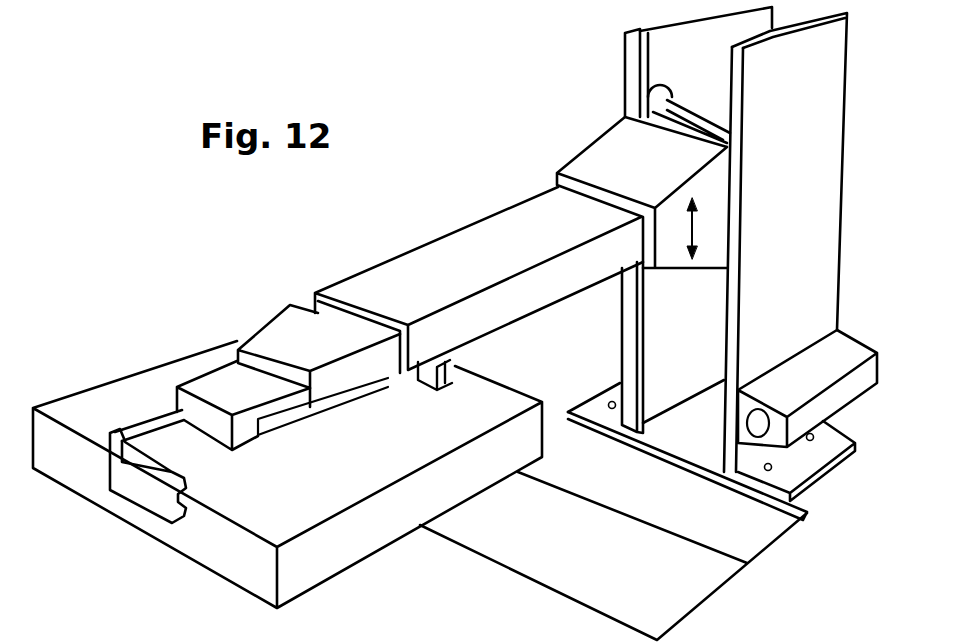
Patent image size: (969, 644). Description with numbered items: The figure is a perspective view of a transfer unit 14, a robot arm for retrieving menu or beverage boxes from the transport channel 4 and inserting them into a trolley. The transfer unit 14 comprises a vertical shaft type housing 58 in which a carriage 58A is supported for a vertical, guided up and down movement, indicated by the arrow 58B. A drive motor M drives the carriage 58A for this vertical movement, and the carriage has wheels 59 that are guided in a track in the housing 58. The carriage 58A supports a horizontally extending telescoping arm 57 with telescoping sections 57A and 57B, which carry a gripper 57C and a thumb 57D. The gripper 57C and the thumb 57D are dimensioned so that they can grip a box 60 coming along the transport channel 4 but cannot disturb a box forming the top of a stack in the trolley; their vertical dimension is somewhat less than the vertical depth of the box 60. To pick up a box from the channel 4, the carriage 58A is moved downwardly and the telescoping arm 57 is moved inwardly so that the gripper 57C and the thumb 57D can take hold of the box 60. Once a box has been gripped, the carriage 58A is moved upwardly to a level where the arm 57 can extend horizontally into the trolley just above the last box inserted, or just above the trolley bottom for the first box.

The transport channel 4 is at (586, 564).
The transfer unit 14 is at (513, 163).
The telescoping arm 57 is at (388, 282).
The telescoping section 57A is at (278, 343).
The telescoping section 57B is at (243, 438).
The gripper 57C is at (152, 497).
The thumb 57D is at (458, 368).
The vertical shaft type housing 58 is at (628, 115).
The carriage 58A is at (672, 266).
The arrow 58B is at (698, 223).
The wheels 59 is at (649, 93).
The box 60 is at (155, 368).
The drive motor M is at (800, 375).